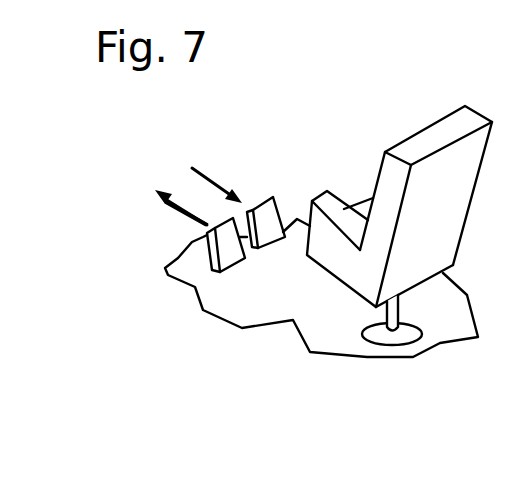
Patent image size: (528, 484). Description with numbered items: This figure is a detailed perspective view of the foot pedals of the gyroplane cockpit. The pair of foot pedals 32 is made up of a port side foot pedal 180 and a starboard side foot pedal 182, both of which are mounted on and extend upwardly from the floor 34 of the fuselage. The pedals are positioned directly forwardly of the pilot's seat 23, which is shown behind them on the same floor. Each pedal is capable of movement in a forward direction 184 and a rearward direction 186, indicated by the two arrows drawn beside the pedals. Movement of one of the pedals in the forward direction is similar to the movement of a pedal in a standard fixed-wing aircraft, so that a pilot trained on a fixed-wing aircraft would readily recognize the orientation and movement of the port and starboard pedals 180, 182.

The pilot's seat 23 is at (450, 127).
The pair of foot pedals 32 is at (175, 171).
The floor 34 is at (346, 326).
The port side foot pedal 180 is at (230, 245).
The starboard side foot pedal 182 is at (270, 215).
The forward direction 184 is at (188, 215).
The rearward direction 186 is at (208, 180).